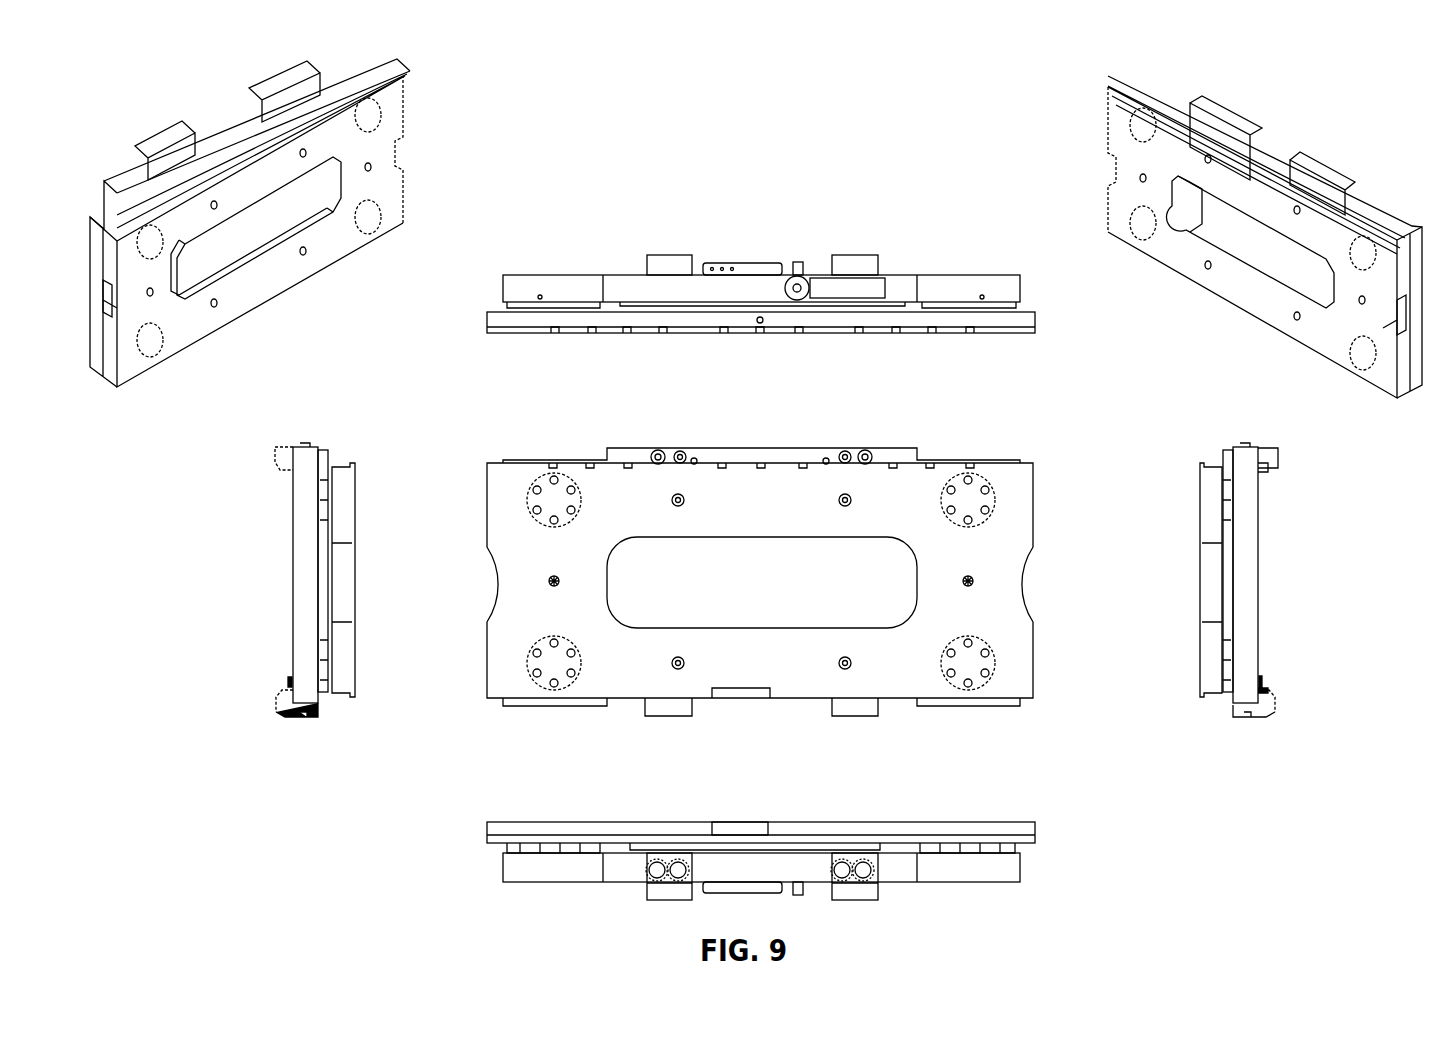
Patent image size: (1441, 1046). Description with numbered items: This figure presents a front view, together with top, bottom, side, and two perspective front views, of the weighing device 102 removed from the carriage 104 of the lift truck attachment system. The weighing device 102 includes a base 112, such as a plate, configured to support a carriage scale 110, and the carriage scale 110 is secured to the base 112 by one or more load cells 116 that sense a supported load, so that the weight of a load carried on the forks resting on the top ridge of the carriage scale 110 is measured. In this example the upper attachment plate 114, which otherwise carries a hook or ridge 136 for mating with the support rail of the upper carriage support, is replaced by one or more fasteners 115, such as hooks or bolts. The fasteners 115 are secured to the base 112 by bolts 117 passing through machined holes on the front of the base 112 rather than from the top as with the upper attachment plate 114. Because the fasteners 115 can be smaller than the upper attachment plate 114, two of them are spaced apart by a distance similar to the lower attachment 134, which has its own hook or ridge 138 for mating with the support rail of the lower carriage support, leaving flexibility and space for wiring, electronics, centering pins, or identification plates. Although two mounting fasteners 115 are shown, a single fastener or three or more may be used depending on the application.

The weighing device 102 is at (486, 299).
The carriage 104 is at (619, 195).
The carriage scale 110 is at (497, 462).
The base 112 is at (562, 275).
The upper attachment plate 114 is at (1265, 447).
The fasteners 115 is at (683, 255).
The load cells 116 is at (968, 690).
The bolts 117 is at (870, 441).
The lower attachment 134 is at (671, 851).
The hook or ridge 136 is at (1284, 473).
The hook or ridge 138 is at (1286, 691).